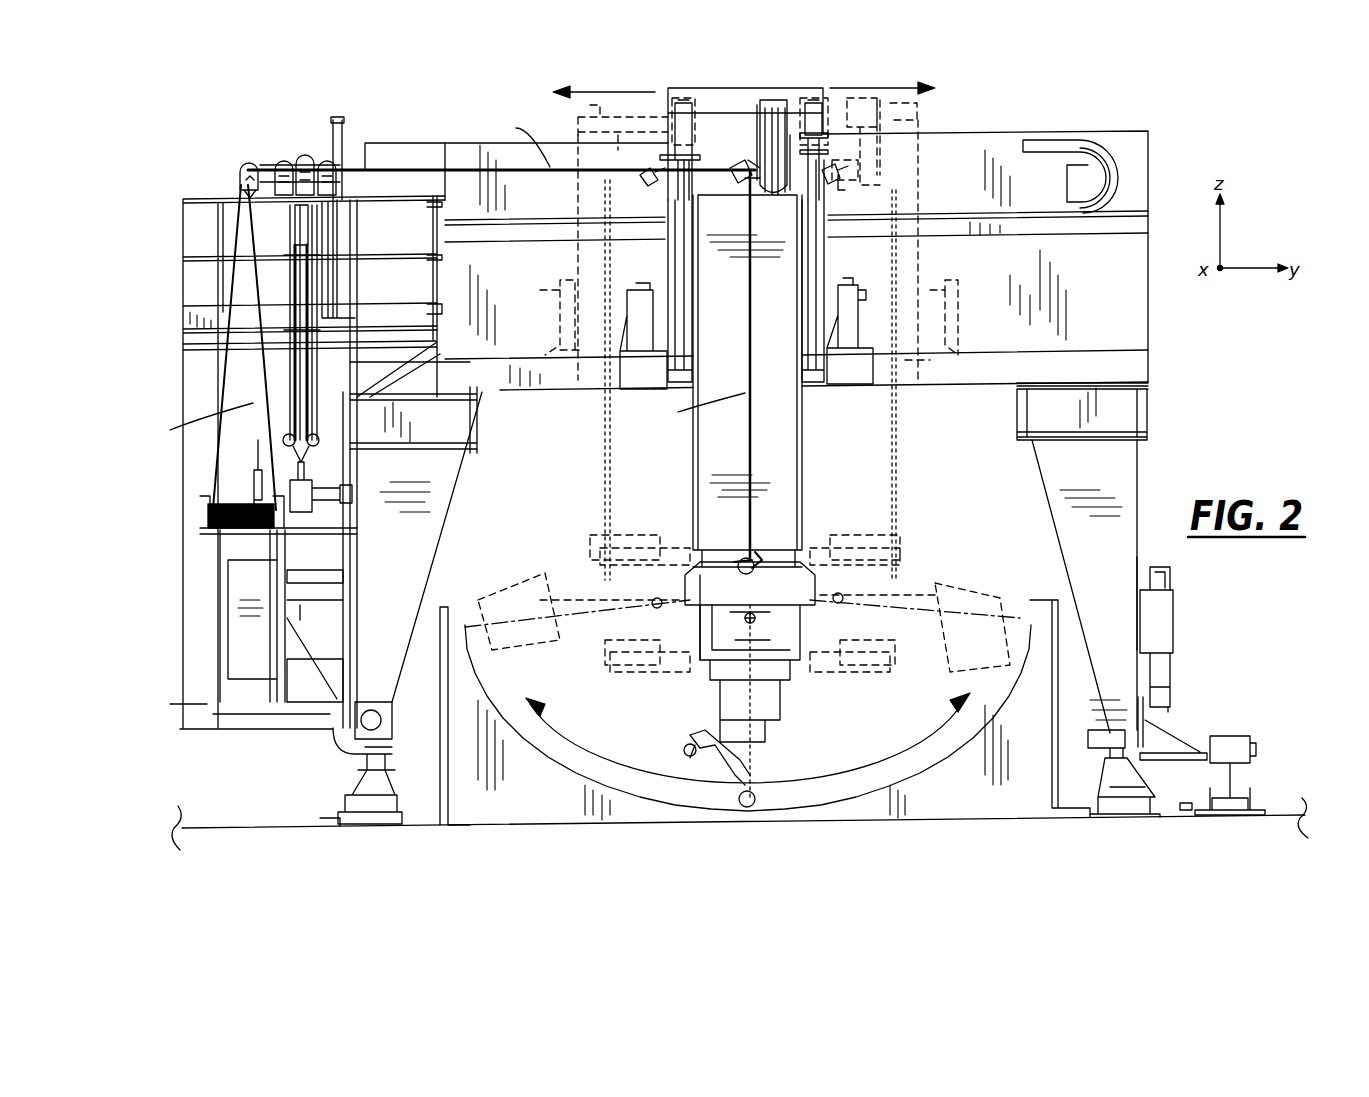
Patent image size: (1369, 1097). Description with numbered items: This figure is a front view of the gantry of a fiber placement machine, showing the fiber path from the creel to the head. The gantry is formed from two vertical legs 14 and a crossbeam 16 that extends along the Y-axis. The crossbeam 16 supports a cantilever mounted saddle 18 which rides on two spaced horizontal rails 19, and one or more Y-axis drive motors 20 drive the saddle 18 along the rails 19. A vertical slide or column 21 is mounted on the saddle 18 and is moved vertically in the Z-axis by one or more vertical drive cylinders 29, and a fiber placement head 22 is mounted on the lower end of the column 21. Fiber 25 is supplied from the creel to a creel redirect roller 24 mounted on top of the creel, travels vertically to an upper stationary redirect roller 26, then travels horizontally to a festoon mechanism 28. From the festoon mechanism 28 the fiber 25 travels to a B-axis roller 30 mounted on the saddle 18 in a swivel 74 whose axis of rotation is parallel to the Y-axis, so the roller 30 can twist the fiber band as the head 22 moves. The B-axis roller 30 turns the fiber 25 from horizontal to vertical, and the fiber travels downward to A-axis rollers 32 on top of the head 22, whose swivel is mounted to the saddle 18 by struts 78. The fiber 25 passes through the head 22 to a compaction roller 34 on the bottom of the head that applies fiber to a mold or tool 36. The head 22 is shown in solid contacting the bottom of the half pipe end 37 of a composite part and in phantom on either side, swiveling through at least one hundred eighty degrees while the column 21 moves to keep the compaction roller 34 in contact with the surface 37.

The vertical legs 14 is at (432, 517).
The crossbeam 16 is at (1110, 276).
The saddle 18 is at (706, 98).
The horizontal rails 19 is at (1016, 230).
The Y-axis drive motors 20 is at (640, 307).
The column 21 is at (728, 434).
The fiber placement head 22 is at (918, 583).
The creel redirect roller 24 is at (233, 505).
The fiber 25 is at (430, 165).
The upper stationary redirect roller 26 is at (240, 177).
The festoon mechanism 28 is at (286, 150).
The vertical drive cylinders 29 is at (678, 258).
The B-axis roller 30 is at (750, 170).
The A-axis rollers 32 is at (758, 552).
The compaction roller 34 is at (752, 797).
The mold or tool 36 is at (1035, 738).
The half pipe end 37 is at (940, 755).
The swivel 74 is at (770, 135).
The struts 78 is at (732, 118).